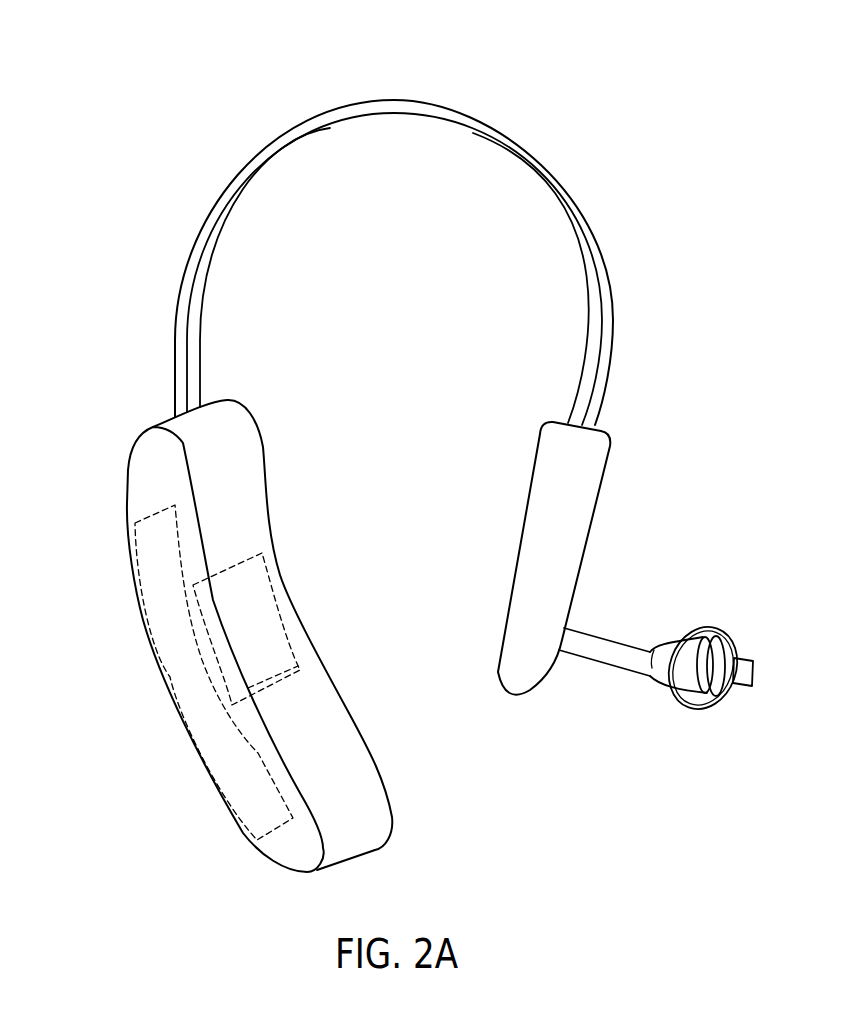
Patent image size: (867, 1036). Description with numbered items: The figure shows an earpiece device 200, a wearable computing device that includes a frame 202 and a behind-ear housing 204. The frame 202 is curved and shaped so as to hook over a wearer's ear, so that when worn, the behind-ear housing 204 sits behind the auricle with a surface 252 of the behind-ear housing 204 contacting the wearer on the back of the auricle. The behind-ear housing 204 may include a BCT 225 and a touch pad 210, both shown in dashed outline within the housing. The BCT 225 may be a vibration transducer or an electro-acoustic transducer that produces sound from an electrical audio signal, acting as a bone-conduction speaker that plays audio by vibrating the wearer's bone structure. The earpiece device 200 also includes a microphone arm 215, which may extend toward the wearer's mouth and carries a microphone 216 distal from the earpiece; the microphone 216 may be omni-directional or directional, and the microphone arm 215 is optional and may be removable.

The earpiece device 200 is at (134, 93).
The frame 202 is at (375, 106).
The behind-ear housing 204 is at (45, 441).
The touch pad 210 is at (152, 547).
The microphone arm 215 is at (623, 653).
The microphone 216 is at (733, 639).
The BCT 225 is at (281, 607).
The surface 252 is at (305, 701).